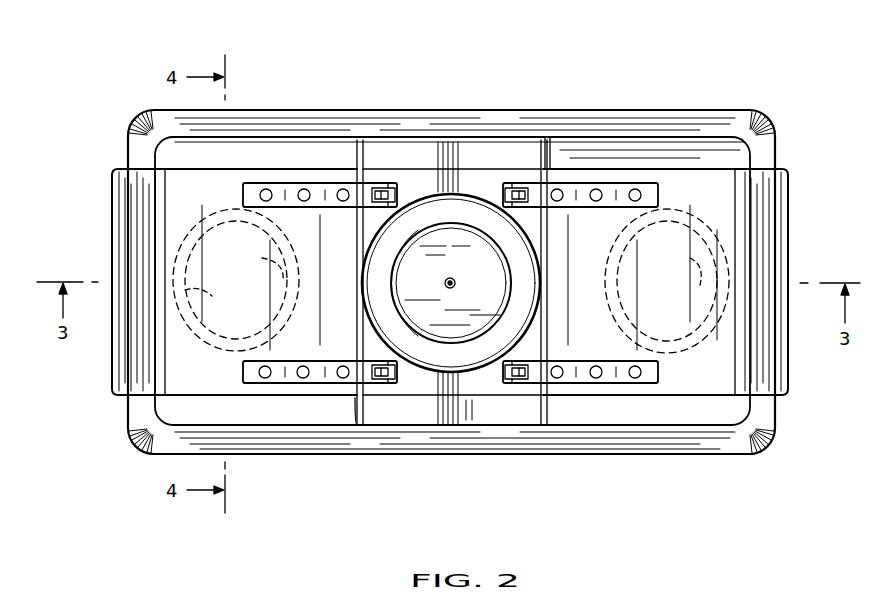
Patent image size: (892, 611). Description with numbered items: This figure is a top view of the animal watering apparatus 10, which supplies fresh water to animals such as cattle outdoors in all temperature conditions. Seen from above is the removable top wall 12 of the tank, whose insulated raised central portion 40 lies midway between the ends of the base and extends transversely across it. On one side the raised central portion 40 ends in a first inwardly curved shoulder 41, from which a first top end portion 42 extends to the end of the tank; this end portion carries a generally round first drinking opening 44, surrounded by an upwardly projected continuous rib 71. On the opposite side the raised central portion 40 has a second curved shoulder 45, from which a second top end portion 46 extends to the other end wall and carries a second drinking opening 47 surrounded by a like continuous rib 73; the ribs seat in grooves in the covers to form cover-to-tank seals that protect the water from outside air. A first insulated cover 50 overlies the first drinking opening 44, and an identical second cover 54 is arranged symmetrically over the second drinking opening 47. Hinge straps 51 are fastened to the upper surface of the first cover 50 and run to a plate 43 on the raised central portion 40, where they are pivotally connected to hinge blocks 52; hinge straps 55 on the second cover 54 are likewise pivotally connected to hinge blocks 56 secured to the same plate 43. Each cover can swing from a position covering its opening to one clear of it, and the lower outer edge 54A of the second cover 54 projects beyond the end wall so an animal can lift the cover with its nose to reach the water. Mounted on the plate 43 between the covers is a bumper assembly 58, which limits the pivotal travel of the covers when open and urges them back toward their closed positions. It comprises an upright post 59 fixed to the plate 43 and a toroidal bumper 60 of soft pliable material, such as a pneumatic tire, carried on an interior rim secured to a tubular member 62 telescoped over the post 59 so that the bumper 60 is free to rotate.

The animal watering apparatus 10 is at (740, 93).
The top wall 12 is at (456, 145).
The raised central portion 40 is at (470, 410).
The first curved shoulder 41 is at (353, 407).
The first top end portion 42 is at (245, 412).
The plate 43 is at (382, 178).
The first drinking opening 44 is at (300, 255).
The second curved shoulder 45 is at (558, 138).
The second top end portion 46 is at (657, 153).
The second drinking opening 47 is at (637, 262).
The first cover 50 is at (140, 200).
The hinge straps 51 is at (275, 208).
The hinge blocks 52 is at (393, 190).
The second cover 54 is at (770, 197).
The lower outer edge 54A is at (790, 228).
The hinge straps 55 is at (617, 207).
The hinge blocks 56 is at (495, 192).
The bumper assembly 58 is at (440, 269).
The post 59 is at (452, 279).
The toroidal bumper 60 is at (525, 310).
The tubular member 62 is at (456, 284).
The continuous rib 71 is at (200, 293).
The continuous rib 73 is at (701, 273).